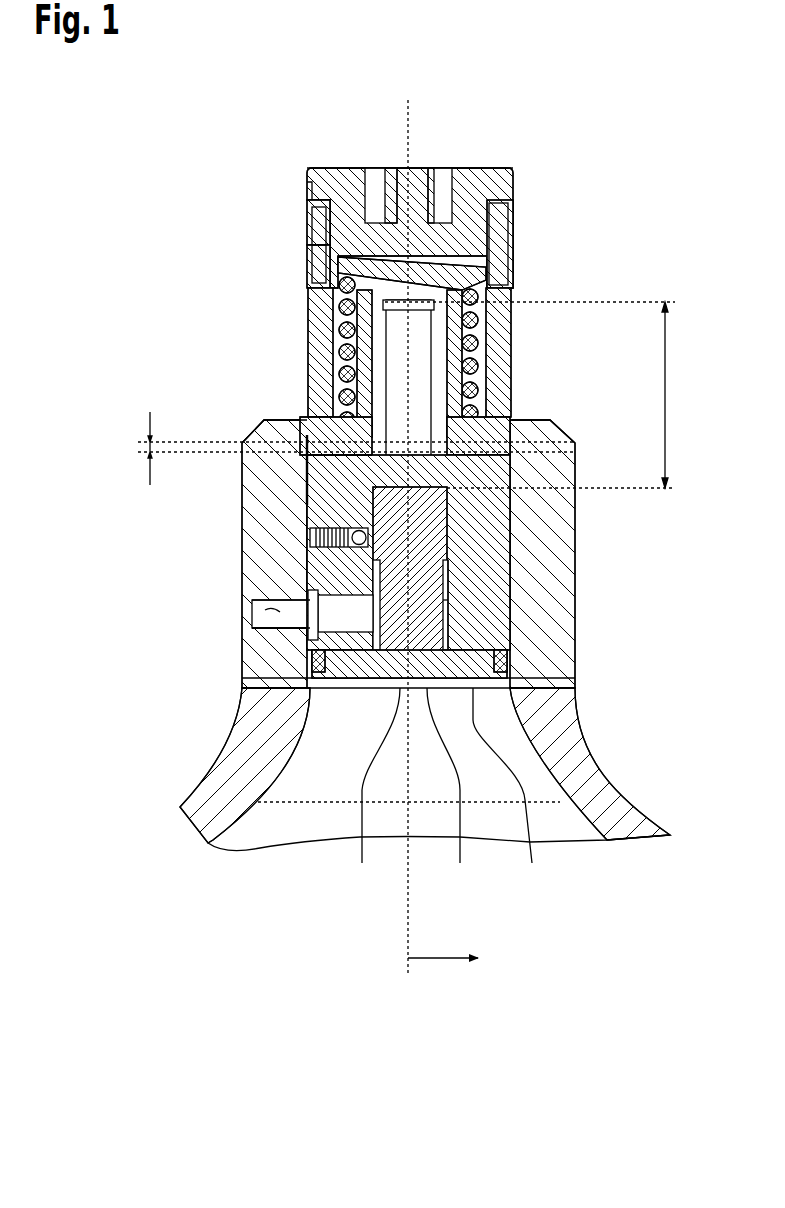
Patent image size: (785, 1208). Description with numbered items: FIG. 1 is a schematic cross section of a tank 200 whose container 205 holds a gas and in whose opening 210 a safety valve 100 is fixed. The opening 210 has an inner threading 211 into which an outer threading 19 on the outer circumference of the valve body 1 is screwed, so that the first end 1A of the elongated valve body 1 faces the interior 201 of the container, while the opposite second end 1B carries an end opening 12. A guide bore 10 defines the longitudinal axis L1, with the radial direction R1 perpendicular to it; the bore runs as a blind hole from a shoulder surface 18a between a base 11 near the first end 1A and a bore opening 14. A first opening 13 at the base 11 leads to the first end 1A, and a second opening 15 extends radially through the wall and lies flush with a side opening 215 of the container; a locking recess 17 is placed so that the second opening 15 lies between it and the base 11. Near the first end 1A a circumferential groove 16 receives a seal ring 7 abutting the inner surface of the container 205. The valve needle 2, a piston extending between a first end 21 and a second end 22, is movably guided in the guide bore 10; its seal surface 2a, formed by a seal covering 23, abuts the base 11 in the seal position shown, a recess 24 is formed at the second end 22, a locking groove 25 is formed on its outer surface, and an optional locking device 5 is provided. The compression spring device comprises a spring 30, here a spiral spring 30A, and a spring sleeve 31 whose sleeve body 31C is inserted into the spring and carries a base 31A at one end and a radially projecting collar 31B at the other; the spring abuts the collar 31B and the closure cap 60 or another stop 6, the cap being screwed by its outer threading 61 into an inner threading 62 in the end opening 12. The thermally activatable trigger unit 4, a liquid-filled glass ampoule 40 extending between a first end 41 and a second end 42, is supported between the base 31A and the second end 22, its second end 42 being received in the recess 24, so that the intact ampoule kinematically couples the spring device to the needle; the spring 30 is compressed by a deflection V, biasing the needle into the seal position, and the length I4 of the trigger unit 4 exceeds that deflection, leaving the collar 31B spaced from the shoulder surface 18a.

The safety valve 100 is at (278, 143).
The tank 200 is at (133, 302).
The interior 201 is at (325, 925).
The container 205 is at (585, 757).
The first end 41 is at (398, 250).
The longitudinal axis L1 is at (432, 120).
The second end 1B is at (307, 190).
The stop 6 is at (459, 225).
The closure cap 60 is at (513, 172).
The outer threading 61 is at (307, 222).
The inner threading 62 is at (307, 252).
The end opening 12 is at (513, 224).
The base 31A is at (505, 288).
The spring 30 is at (337, 352).
The spiral spring 30A is at (338, 297).
The spring sleeve 31 is at (505, 340).
The sleeve body 31C is at (505, 365).
The collar 31B is at (512, 420).
The trigger unit 4 is at (331, 393).
The glass ampoule 40 is at (396, 372).
The shoulder surface 18a is at (345, 420).
The length I4 is at (672, 386).
The valve body 1 is at (265, 428).
The bore opening 14 is at (560, 441).
The second end 22 is at (485, 455).
The deflection V is at (150, 480).
The recess 24 is at (322, 475).
The guide bore 10 is at (322, 492).
The valve needle 2 is at (296, 536).
The locking device 5 is at (330, 520).
The outer threading 19 is at (520, 512).
The inner threading 211 is at (515, 523).
The second end 42 is at (510, 548).
The locking recess 17 is at (292, 545).
The second opening 15 is at (292, 578).
The opening 210 is at (530, 588).
The locking groove 25 is at (500, 594).
The side opening 215 is at (262, 620).
The first end 21 is at (455, 605).
The seal ring 7 is at (505, 652).
The seal covering 23 is at (275, 655).
The circumferential groove 16 is at (500, 672).
The base 11 is at (322, 688).
The first opening 13 is at (375, 792).
The seal surface 2a is at (450, 792).
The first end 1A is at (511, 792).
The radial direction R1 is at (445, 962).